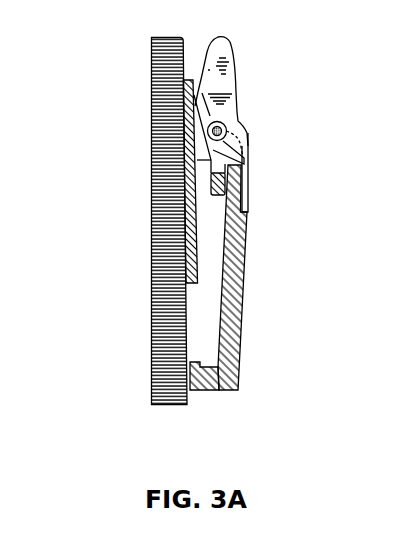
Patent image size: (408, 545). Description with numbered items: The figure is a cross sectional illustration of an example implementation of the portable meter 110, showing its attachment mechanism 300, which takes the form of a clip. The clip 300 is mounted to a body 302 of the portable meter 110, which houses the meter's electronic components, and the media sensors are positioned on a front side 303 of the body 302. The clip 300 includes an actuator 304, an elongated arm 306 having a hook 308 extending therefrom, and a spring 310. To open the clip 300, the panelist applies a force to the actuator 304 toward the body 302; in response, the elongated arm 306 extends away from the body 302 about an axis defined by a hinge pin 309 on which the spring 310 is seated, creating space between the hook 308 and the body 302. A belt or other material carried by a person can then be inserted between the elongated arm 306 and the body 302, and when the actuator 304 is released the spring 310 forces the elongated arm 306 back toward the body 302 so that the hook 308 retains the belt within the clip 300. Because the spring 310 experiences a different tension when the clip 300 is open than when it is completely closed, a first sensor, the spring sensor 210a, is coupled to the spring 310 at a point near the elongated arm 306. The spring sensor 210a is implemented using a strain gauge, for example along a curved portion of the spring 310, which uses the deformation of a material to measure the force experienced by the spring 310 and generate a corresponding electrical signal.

The portable meter 110 is at (100, 43).
The attachment mechanism 300 is at (305, 55).
The body 302 is at (151, 242).
The front side 303 is at (152, 378).
The actuator 304 is at (227, 33).
The elongated arm 306 is at (243, 313).
The hook 308 is at (210, 392).
The hinge pin 309 is at (226, 126).
The spring 310 is at (245, 216).
The spring sensor 210a is at (250, 167).